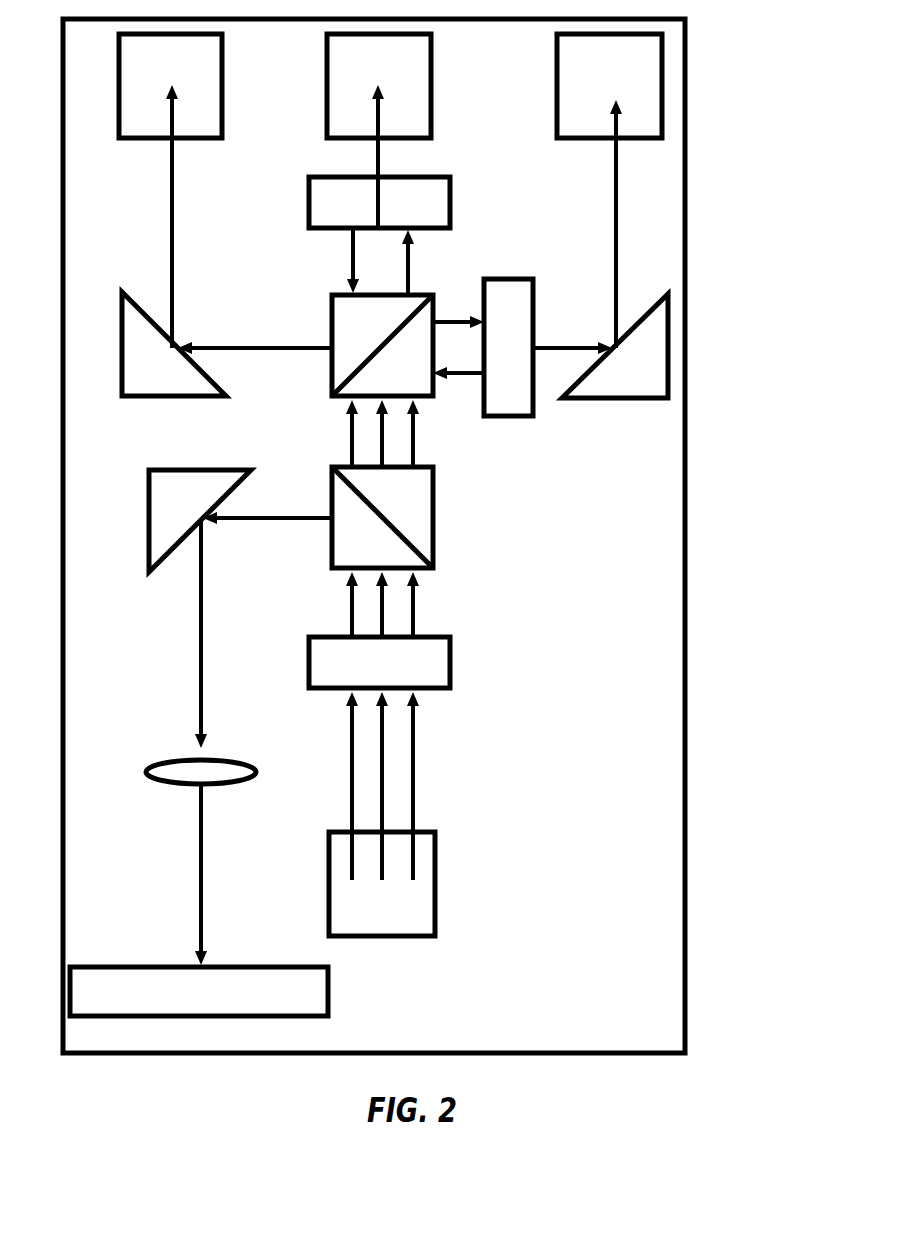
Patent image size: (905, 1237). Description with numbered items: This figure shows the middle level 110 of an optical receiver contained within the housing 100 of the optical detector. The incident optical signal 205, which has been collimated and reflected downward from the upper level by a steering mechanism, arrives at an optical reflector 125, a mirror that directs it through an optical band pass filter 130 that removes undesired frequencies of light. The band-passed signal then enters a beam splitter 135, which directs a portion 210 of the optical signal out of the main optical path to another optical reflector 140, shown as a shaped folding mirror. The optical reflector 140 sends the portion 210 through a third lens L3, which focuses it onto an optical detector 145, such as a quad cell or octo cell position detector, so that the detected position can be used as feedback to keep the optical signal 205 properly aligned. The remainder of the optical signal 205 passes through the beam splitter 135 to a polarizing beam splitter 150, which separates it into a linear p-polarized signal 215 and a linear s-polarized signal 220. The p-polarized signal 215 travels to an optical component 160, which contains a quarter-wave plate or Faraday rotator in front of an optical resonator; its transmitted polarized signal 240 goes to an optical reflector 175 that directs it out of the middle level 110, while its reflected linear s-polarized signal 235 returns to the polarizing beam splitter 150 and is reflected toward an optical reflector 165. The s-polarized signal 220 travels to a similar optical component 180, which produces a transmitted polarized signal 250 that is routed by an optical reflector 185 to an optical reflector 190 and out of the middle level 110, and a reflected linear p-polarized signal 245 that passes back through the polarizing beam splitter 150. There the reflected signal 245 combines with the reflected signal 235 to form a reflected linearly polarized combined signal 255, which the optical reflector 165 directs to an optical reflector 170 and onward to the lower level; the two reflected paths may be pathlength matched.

The housing 100 is at (687, 395).
The middle level 110 is at (630, 713).
The optical reflector 125 is at (437, 893).
The optical band pass filter 130 is at (452, 662).
The beam splitter 135 is at (433, 505).
The optical reflector 140 is at (175, 468).
The optical detector 145 is at (330, 980).
The polarizing beam splitter 150 is at (330, 365).
The optical component 160 is at (309, 200).
The optical reflector 165 is at (188, 398).
The optical reflector 170 is at (224, 70).
The optical reflector 175 is at (433, 88).
The optical component 180 is at (513, 420).
The optical reflector 185 is at (605, 385).
The optical reflector 190 is at (557, 95).
The incident optical signal 205 is at (405, 770).
The portion of the optical signal 210 is at (293, 523).
The linear p-polarized signal 215 is at (412, 260).
The linear s-polarized signal 220 is at (450, 313).
The reflected linear s-polarized signal 235 is at (352, 238).
The transmitted polarized signal 240 is at (375, 152).
The reflected linear p-polarized signal 245 is at (467, 378).
The transmitted polarized signal 250 is at (565, 340).
The reflected linearly polarized combined signal 255 is at (227, 342).
The third lens L3 is at (170, 773).